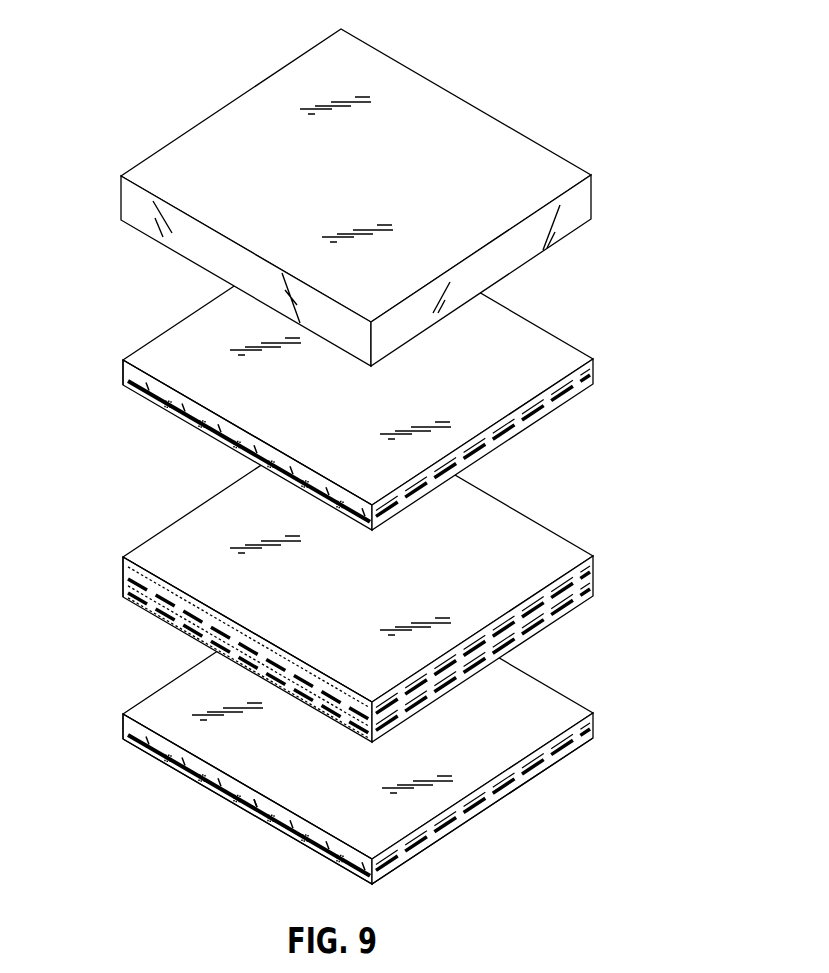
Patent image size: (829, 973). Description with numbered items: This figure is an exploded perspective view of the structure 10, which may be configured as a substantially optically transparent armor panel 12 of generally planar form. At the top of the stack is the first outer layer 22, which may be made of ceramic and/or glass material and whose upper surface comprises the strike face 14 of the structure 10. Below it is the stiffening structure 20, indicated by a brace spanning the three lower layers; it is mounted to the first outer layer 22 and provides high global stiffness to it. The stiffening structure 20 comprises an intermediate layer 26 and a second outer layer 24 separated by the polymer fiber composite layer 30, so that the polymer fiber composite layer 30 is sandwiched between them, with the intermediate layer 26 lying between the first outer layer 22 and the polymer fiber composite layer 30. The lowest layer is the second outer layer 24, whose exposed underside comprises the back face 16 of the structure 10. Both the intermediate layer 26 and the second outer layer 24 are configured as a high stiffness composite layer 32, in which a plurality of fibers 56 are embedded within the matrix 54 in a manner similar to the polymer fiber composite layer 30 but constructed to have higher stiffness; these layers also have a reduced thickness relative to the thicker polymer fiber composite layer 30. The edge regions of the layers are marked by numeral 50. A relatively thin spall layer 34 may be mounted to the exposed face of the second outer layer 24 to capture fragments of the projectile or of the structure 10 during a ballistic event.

The structure 10 is at (394, 463).
The armor panel 12 is at (385, 197).
The strike face 14 is at (425, 100).
The first outer layer 22 is at (580, 205).
The stiffening structure 20 is at (394, 555).
The intermediate layer 26 is at (522, 335).
The polymer fiber composite layer 30 is at (500, 530).
The second outer layer 24 is at (358, 732).
The back face 16 is at (400, 867).
The matrix 54 is at (157, 710).
The side edge of layer 50 is at (128, 731).
The fibers 56 is at (218, 427).
The high stiffness composite layer 32 is at (318, 852).
The spall layer 34 is at (265, 822).